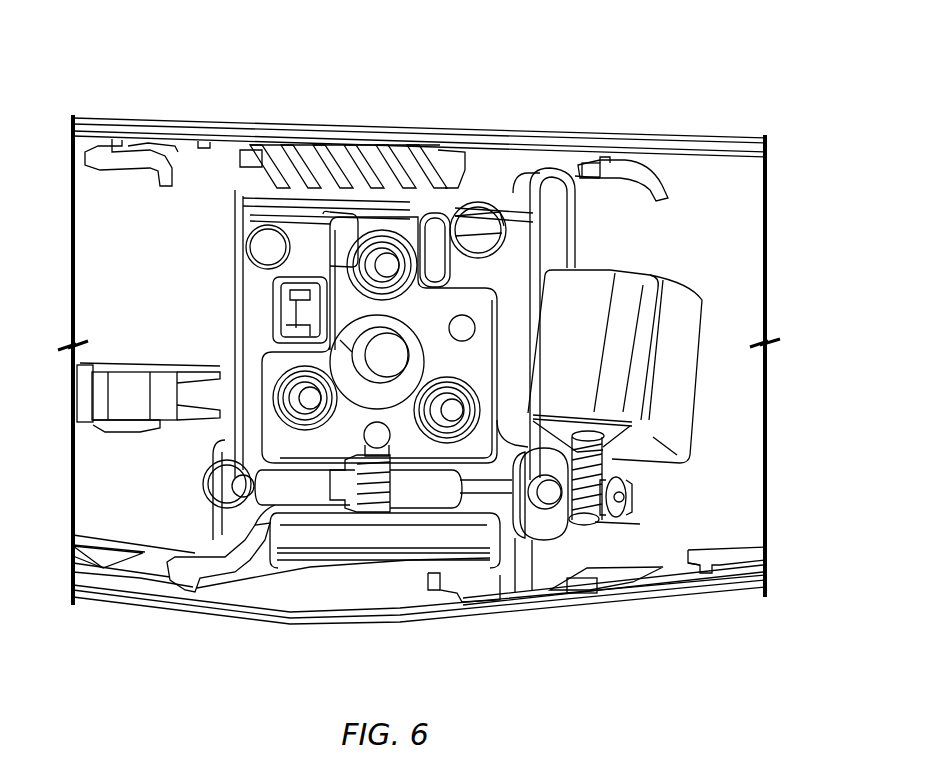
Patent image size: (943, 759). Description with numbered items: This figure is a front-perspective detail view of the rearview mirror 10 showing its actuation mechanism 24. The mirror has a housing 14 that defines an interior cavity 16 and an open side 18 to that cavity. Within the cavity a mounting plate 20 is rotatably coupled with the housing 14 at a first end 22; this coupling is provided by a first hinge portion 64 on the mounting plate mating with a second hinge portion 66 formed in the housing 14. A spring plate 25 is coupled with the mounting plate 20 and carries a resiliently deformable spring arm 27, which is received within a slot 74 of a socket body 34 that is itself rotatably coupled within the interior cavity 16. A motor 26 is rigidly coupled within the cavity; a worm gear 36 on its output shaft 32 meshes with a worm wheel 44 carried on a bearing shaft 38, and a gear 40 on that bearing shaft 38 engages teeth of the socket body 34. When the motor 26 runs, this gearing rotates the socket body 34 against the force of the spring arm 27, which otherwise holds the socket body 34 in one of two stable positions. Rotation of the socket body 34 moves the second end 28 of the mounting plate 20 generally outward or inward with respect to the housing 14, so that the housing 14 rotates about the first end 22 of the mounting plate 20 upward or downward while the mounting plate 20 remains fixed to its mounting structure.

The rearview mirror 10 is at (586, 63).
The housing 14 is at (238, 119).
The interior cavity 16 is at (143, 516).
The open side 18 is at (154, 130).
The mounting plate 20 is at (503, 263).
The first end 22 is at (529, 179).
The actuation mechanism 24 is at (650, 486).
The spring plate 25 is at (432, 296).
The motor 26 is at (648, 315).
The spring arm 27 is at (285, 495).
The second end 28 is at (510, 480).
The output shaft 32 is at (590, 441).
The socket body 34 is at (307, 563).
The worm gear 36 is at (618, 465).
The bearing shaft 38 is at (553, 506).
The gear 40 is at (365, 505).
The worm wheel 44 is at (605, 522).
The first hinge portion 64 is at (398, 195).
The second hinge portion 66 is at (327, 183).
The slot 74 is at (462, 553).